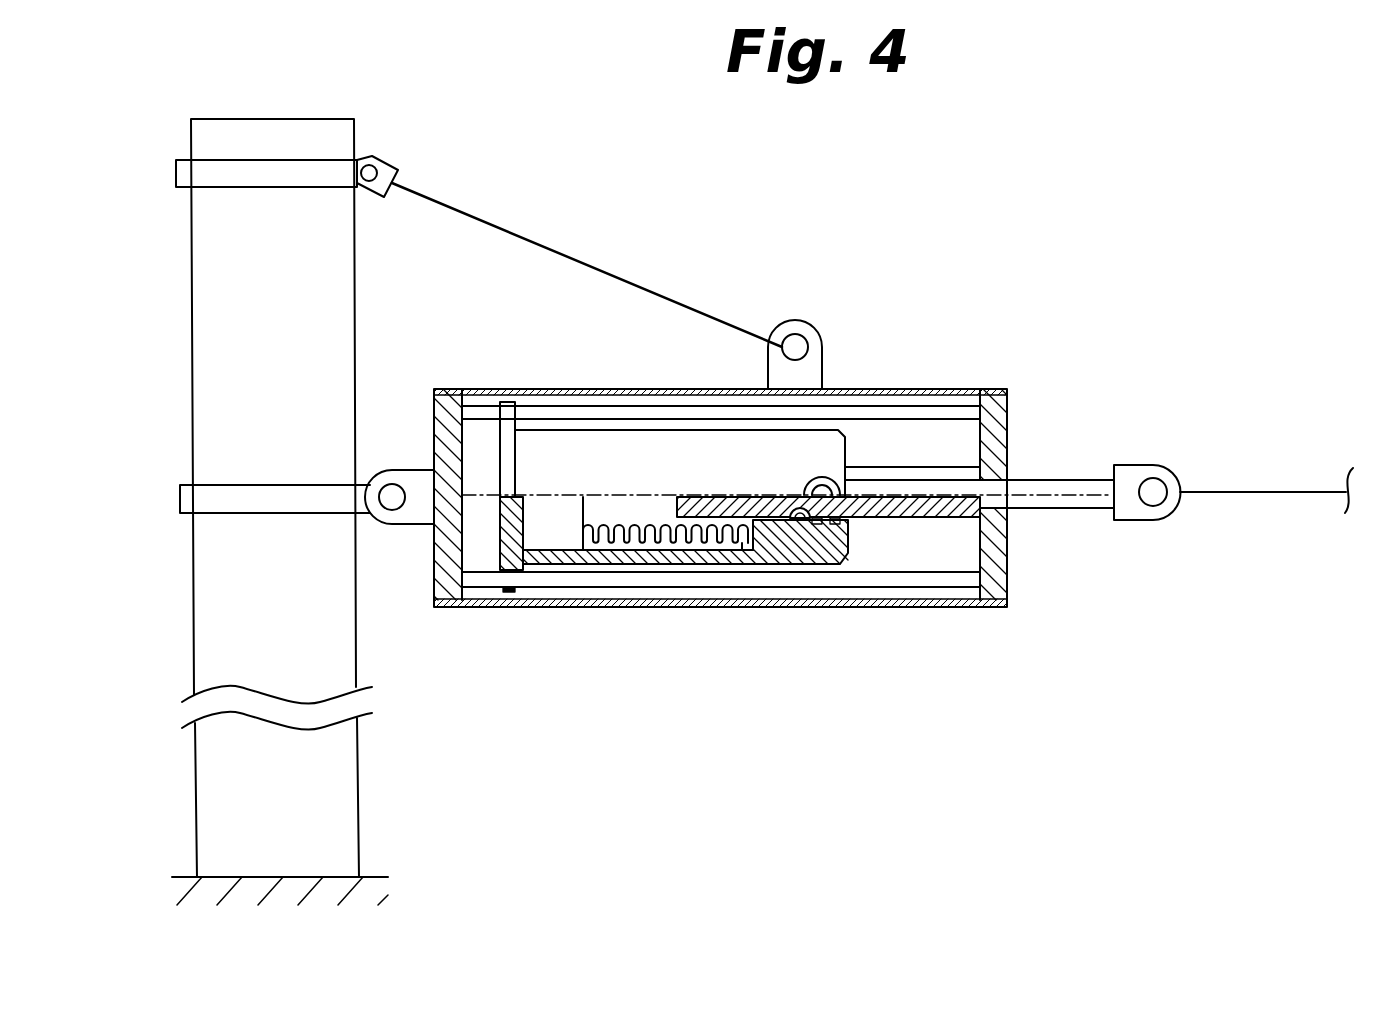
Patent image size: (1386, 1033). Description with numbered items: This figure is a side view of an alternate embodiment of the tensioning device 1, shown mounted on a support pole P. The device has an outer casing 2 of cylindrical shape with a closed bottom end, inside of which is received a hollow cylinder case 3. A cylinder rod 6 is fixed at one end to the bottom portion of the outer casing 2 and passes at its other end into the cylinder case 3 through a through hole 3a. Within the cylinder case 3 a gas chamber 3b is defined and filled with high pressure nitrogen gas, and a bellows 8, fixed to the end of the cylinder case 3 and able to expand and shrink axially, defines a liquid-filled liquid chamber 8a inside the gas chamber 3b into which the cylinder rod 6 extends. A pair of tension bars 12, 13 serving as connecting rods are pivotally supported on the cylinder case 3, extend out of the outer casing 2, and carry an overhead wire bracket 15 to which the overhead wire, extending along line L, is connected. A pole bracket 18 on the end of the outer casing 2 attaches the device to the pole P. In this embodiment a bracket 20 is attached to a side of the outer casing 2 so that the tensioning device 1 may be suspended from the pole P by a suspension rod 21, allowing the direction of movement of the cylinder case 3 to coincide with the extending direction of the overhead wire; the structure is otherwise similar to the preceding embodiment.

The pole P is at (343, 150).
The tensioning device 1 is at (900, 377).
The outer casing 2 is at (518, 390).
The cylinder case 3 is at (635, 557).
The through hole 3a is at (790, 520).
The gas chamber 3b is at (565, 534).
The cylinder rod 6 is at (913, 515).
The bellows 8 is at (728, 527).
The liquid chamber 8a is at (660, 520).
The tension bar 12 is at (1057, 479).
The tension bar 13 is at (1057, 479).
The overhead wire bracket 15 is at (1163, 472).
The pole bracket 18 is at (405, 477).
The bracket 20 is at (782, 328).
The suspension rod 21 is at (503, 230).
The line L is at (1243, 489).